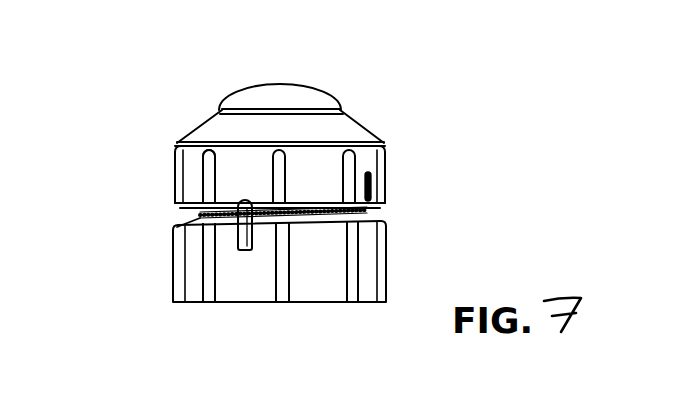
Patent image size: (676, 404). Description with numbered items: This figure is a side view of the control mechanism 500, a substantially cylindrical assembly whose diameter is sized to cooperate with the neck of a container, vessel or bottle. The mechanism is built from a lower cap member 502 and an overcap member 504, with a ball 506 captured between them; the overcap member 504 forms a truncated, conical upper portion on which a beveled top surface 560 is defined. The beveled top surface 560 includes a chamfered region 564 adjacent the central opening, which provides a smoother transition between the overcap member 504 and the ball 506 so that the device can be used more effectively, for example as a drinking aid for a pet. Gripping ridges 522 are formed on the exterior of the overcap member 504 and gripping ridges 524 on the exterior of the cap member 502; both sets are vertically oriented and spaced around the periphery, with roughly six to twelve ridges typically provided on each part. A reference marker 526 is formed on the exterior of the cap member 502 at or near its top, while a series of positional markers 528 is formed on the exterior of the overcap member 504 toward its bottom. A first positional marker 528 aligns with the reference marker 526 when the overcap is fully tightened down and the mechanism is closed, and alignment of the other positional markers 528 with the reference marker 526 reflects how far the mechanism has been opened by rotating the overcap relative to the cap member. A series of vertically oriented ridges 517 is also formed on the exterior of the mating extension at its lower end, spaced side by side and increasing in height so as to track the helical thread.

The control mechanism 500 is at (435, 100).
The lower cap member 502 is at (367, 259).
The overcap member 504 is at (367, 155).
The ball 506 is at (288, 97).
The ridges 517 is at (373, 208).
The gripping ridges 522 is at (290, 186).
The gripping ridges 524 is at (283, 302).
The reference marker 526 is at (255, 232).
The positional markers 528 is at (376, 185).
The beveled top surface 560 is at (276, 131).
The chamfered region 564 is at (327, 111).